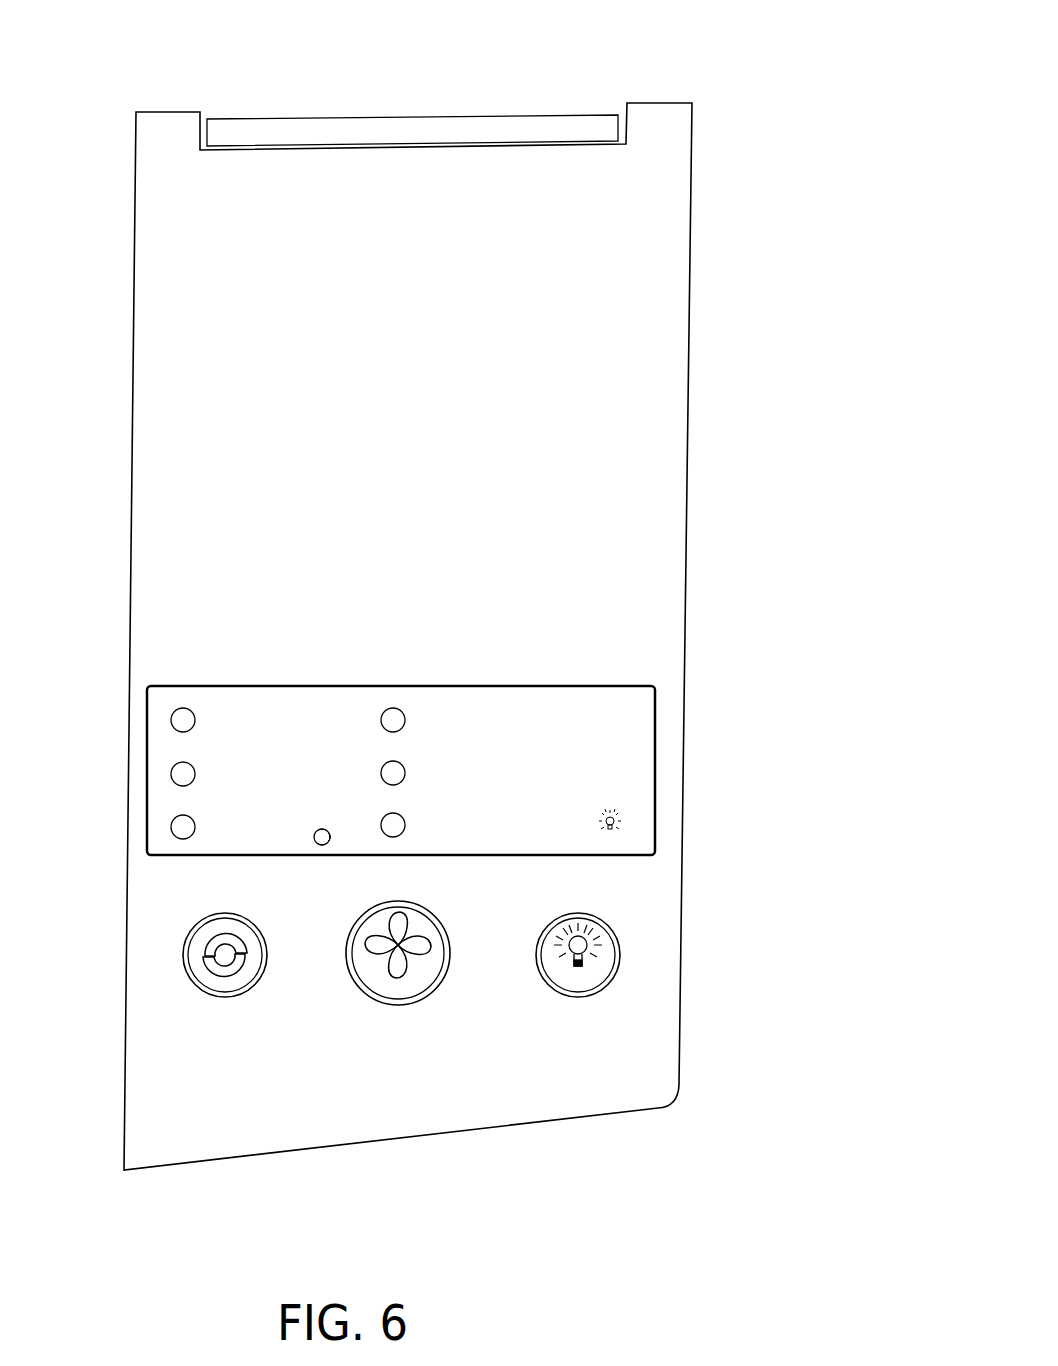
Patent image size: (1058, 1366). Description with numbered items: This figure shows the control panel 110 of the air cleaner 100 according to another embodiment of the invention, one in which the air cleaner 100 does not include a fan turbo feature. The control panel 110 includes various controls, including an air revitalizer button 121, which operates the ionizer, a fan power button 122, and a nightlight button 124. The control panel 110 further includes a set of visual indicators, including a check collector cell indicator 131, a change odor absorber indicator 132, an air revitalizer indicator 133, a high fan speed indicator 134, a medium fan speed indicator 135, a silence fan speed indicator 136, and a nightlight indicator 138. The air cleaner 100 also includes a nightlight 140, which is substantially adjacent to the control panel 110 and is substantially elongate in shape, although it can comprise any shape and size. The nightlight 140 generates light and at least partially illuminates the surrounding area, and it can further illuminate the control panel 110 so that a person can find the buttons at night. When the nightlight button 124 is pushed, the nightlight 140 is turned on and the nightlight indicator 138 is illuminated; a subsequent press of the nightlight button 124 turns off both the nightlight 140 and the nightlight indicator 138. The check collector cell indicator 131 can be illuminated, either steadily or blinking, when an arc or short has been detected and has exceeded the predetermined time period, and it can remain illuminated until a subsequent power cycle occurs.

The air cleaner 100 is at (708, 333).
The control panel 110 is at (800, 1003).
The air revitalizer button 121 is at (232, 997).
The fan power button 122 is at (413, 1005).
The nightlight button 124 is at (620, 965).
The check collector cell indicator 131 is at (171, 719).
The change odor absorber indicator 132 is at (171, 773).
The air revitalizer indicator 133 is at (171, 826).
The high fan speed indicator 134 is at (405, 716).
The medium fan speed indicator 135 is at (405, 768).
The silence fan speed indicator 136 is at (405, 820).
The nightlight indicator 138 is at (623, 820).
The nightlight 140 is at (468, 138).